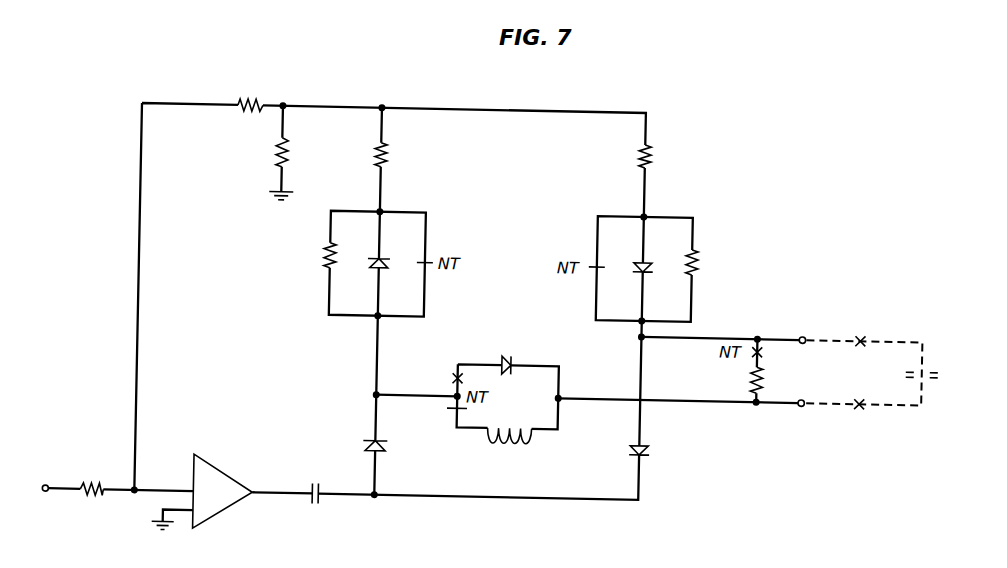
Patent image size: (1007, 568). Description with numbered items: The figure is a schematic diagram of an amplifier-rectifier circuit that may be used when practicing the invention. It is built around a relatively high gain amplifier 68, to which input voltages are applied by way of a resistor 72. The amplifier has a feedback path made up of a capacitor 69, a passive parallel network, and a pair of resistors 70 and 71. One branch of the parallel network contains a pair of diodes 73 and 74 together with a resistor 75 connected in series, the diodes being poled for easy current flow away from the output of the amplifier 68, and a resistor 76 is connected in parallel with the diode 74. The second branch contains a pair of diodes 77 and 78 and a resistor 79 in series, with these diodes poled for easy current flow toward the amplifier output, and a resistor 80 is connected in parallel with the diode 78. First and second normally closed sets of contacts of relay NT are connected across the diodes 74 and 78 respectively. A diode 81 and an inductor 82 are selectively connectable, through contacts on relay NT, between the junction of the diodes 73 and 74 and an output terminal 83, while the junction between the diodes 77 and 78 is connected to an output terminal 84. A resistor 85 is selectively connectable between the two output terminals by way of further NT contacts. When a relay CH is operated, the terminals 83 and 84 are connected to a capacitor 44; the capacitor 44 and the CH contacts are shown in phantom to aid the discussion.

The capacitor 44 is at (947, 360).
The amplifier 68 is at (221, 462).
The capacitor 69 is at (323, 503).
The resistor 70 is at (239, 100).
The resistor 71 is at (272, 149).
The resistor 72 is at (103, 484).
The diode 73 is at (393, 442).
The diode 74 is at (392, 255).
The resistor 75 is at (390, 148).
The resistor 76 is at (326, 256).
The diode 77 is at (664, 442).
The diode 78 is at (654, 255).
The resistor 79 is at (655, 147).
The resistor 80 is at (704, 254).
The diode 81 is at (516, 347).
The inductor 82 is at (510, 434).
The output terminal 83 is at (807, 394).
The output terminal 84 is at (807, 323).
The resistor 85 is at (757, 365).